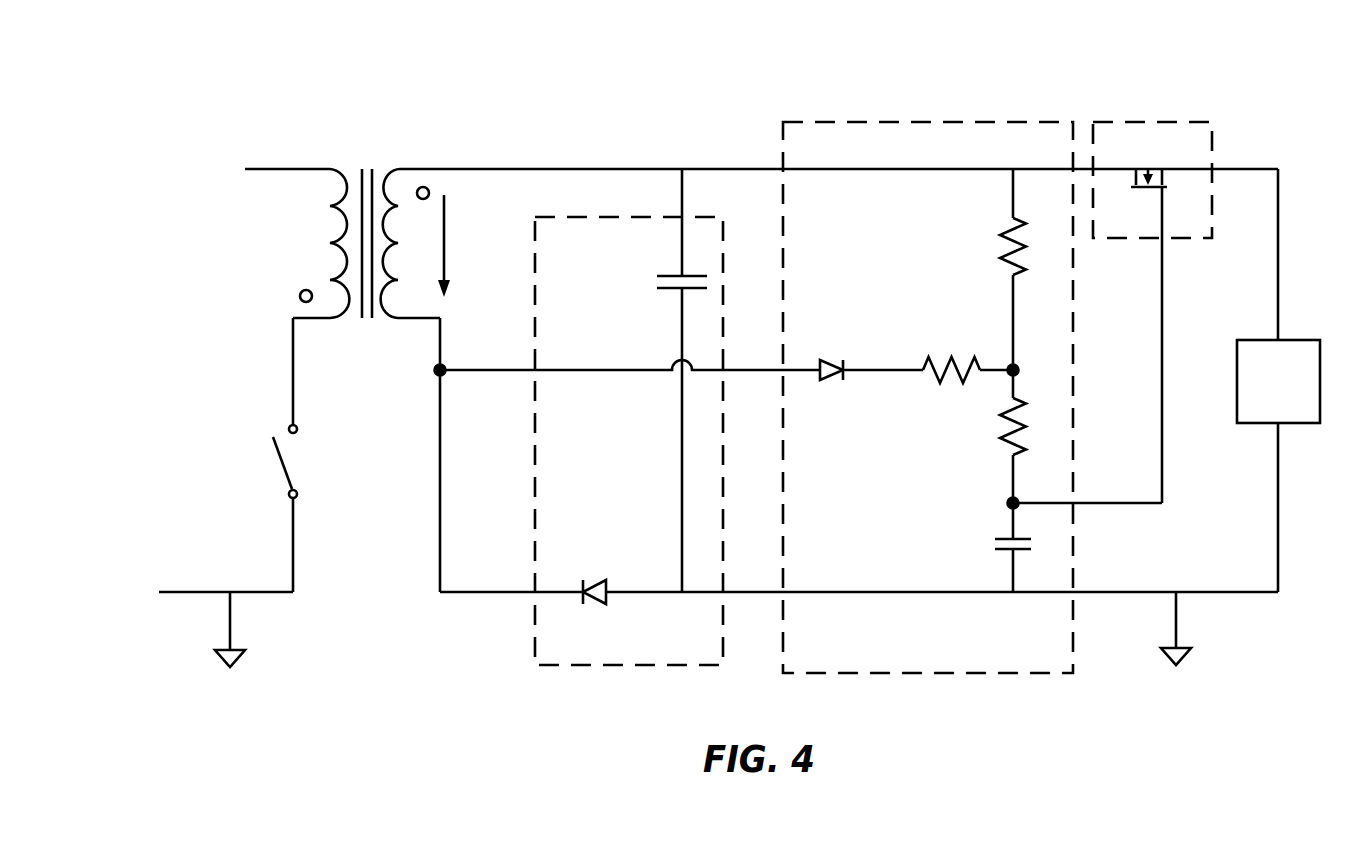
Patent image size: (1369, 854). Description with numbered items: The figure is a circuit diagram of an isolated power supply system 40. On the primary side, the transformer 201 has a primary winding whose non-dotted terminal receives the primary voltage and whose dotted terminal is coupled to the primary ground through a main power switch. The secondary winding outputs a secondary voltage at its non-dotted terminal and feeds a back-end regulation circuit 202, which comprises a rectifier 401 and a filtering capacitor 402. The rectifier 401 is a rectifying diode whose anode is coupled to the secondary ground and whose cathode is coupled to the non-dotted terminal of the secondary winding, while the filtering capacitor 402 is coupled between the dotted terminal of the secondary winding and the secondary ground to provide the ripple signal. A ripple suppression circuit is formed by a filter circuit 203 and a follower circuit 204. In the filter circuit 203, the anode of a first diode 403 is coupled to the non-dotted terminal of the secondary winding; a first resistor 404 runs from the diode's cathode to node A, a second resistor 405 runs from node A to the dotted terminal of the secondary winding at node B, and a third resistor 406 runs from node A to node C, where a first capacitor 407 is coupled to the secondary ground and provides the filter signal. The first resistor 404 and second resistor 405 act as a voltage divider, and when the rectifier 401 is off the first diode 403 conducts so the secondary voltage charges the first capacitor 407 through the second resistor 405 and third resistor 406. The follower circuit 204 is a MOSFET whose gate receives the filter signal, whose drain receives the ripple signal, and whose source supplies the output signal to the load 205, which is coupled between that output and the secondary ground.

The isolated power supply system 40 is at (703, 46).
The transformer 201 is at (371, 152).
The back-end regulation circuit 202 is at (535, 635).
The filter circuit 203 is at (868, 122).
The follower circuit 204 is at (1213, 226).
The load 205 is at (1238, 340).
The rectifier 401 is at (617, 586).
The filtering capacitor 402 is at (682, 322).
The first diode 403 is at (849, 360).
The first resistor 404 is at (968, 355).
The second resistor 405 is at (1000, 235).
The third resistor 406 is at (1002, 448).
The first capacitor 407 is at (993, 532).